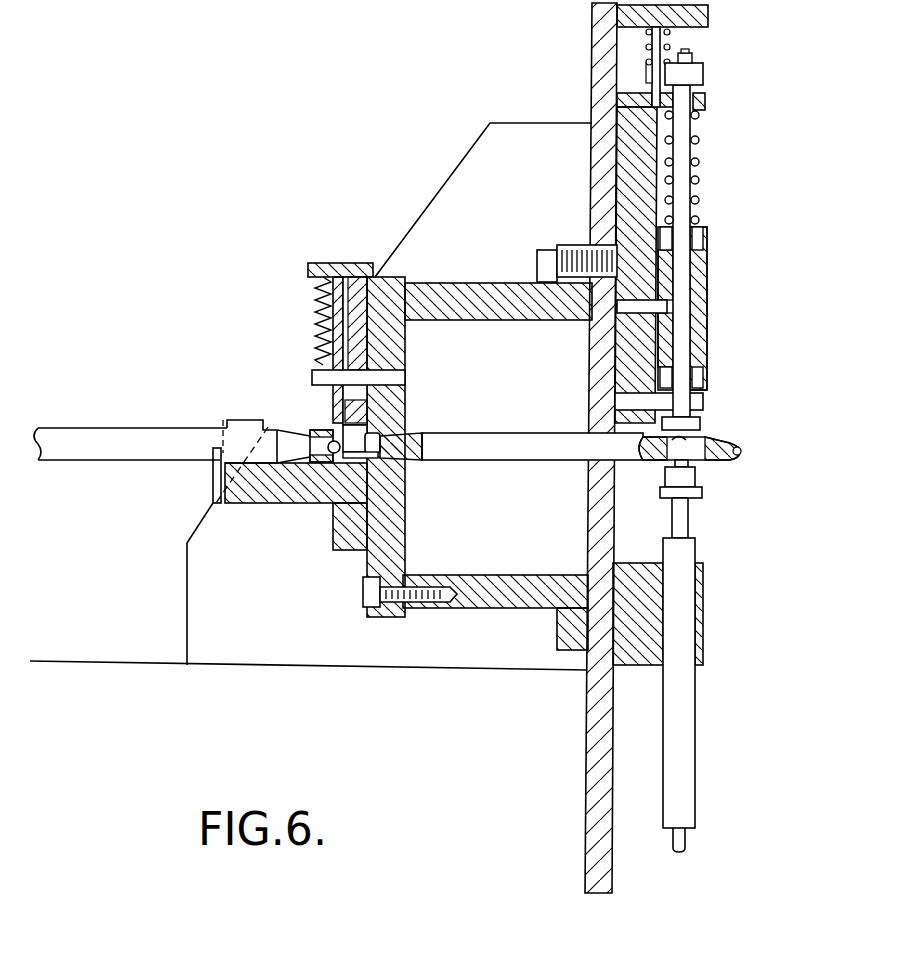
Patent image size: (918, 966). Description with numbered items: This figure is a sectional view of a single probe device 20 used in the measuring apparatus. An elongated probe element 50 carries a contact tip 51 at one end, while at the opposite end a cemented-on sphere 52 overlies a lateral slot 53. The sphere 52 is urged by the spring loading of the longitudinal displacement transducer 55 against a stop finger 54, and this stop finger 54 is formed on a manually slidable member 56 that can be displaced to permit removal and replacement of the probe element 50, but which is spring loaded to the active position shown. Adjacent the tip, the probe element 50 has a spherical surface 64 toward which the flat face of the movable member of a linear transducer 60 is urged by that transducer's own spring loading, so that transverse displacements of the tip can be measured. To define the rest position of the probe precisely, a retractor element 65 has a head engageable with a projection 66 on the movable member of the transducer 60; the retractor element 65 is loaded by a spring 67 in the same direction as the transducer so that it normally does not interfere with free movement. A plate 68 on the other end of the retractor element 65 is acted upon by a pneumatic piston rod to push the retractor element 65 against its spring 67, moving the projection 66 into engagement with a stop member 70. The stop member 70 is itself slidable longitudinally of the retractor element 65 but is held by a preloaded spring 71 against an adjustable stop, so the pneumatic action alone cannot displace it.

The indexing assembly 20 is at (737, 505).
The probe element 50 is at (510, 448).
The contact tip 51 is at (715, 437).
The sphere 52 is at (327, 430).
The lateral slot 53 is at (390, 445).
The stop finger 54 is at (352, 440).
The longitudinal displacement transducer 55 is at (160, 442).
The manually slidable member 56 is at (357, 297).
The linear transducer 60 is at (680, 792).
The spherical surface 64 is at (677, 460).
The retractor element 65 is at (680, 380).
The projection 66 is at (683, 492).
The spring 67 is at (667, 42).
The plate 68 is at (695, 72).
The stop member 70 is at (698, 300).
The spring 71 is at (693, 173).